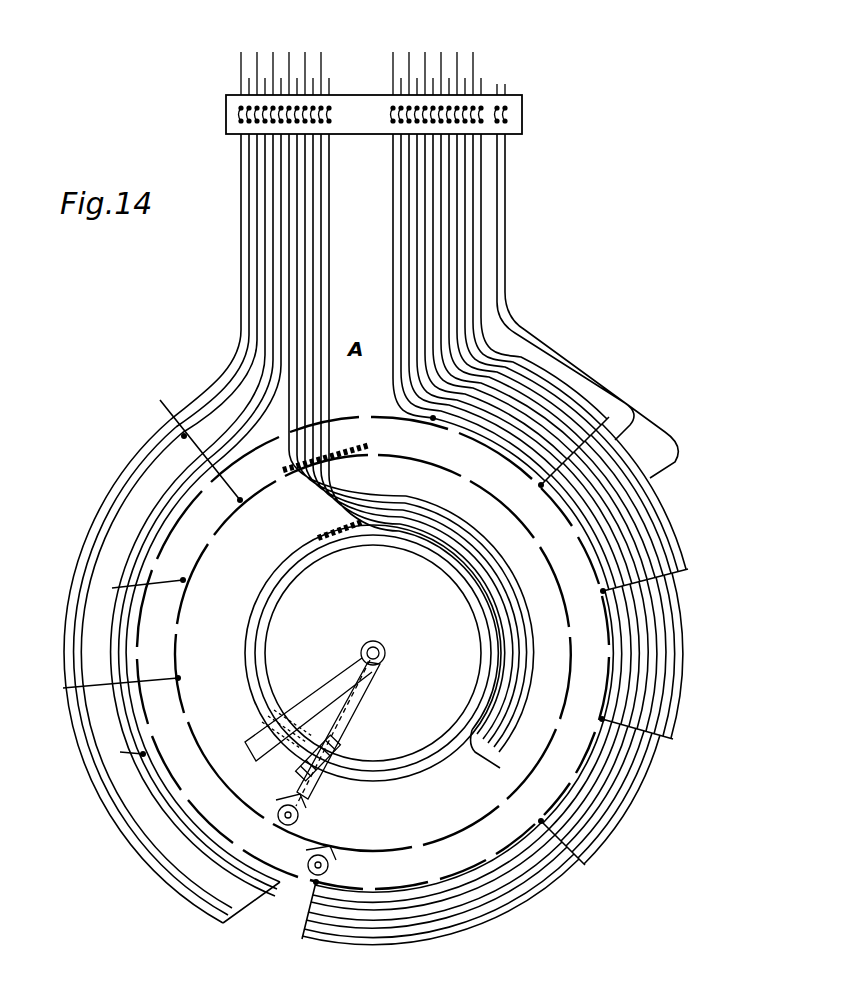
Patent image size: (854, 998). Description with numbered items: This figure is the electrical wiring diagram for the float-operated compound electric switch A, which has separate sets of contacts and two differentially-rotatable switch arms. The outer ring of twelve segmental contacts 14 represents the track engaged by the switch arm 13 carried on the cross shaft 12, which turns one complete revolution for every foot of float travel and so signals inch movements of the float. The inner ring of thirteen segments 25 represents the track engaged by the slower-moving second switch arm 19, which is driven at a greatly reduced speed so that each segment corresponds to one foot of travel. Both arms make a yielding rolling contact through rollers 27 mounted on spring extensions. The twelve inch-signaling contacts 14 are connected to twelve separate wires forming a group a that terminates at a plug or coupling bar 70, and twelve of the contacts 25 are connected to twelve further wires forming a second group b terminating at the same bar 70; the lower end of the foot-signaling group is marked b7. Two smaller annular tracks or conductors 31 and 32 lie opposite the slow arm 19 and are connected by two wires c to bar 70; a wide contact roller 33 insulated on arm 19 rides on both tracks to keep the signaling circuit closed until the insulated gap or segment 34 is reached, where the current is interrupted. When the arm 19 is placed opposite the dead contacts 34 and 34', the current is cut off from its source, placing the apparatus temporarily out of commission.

The plug or coupling bar 70 is at (522, 113).
The cross shaft 12 is at (382, 648).
The switch arm 13 is at (350, 718).
The contact segments 14 is at (242, 838).
The second rotatable switch arm 19 is at (318, 684).
The contact segments 25 is at (258, 802).
The rollers 27 is at (302, 814).
The annular track or conductor 31 is at (326, 572).
The annular track or conductor 32 is at (292, 548).
The wide contact roller 33 is at (330, 756).
The gap or insulated segment 34 is at (340, 550).
The dead contact 34' is at (328, 448).
The group of wires a is at (398, 240).
The group of wires b is at (330, 240).
The foot conductor bundle end b7 is at (272, 236).
The pair of wires c is at (512, 235).